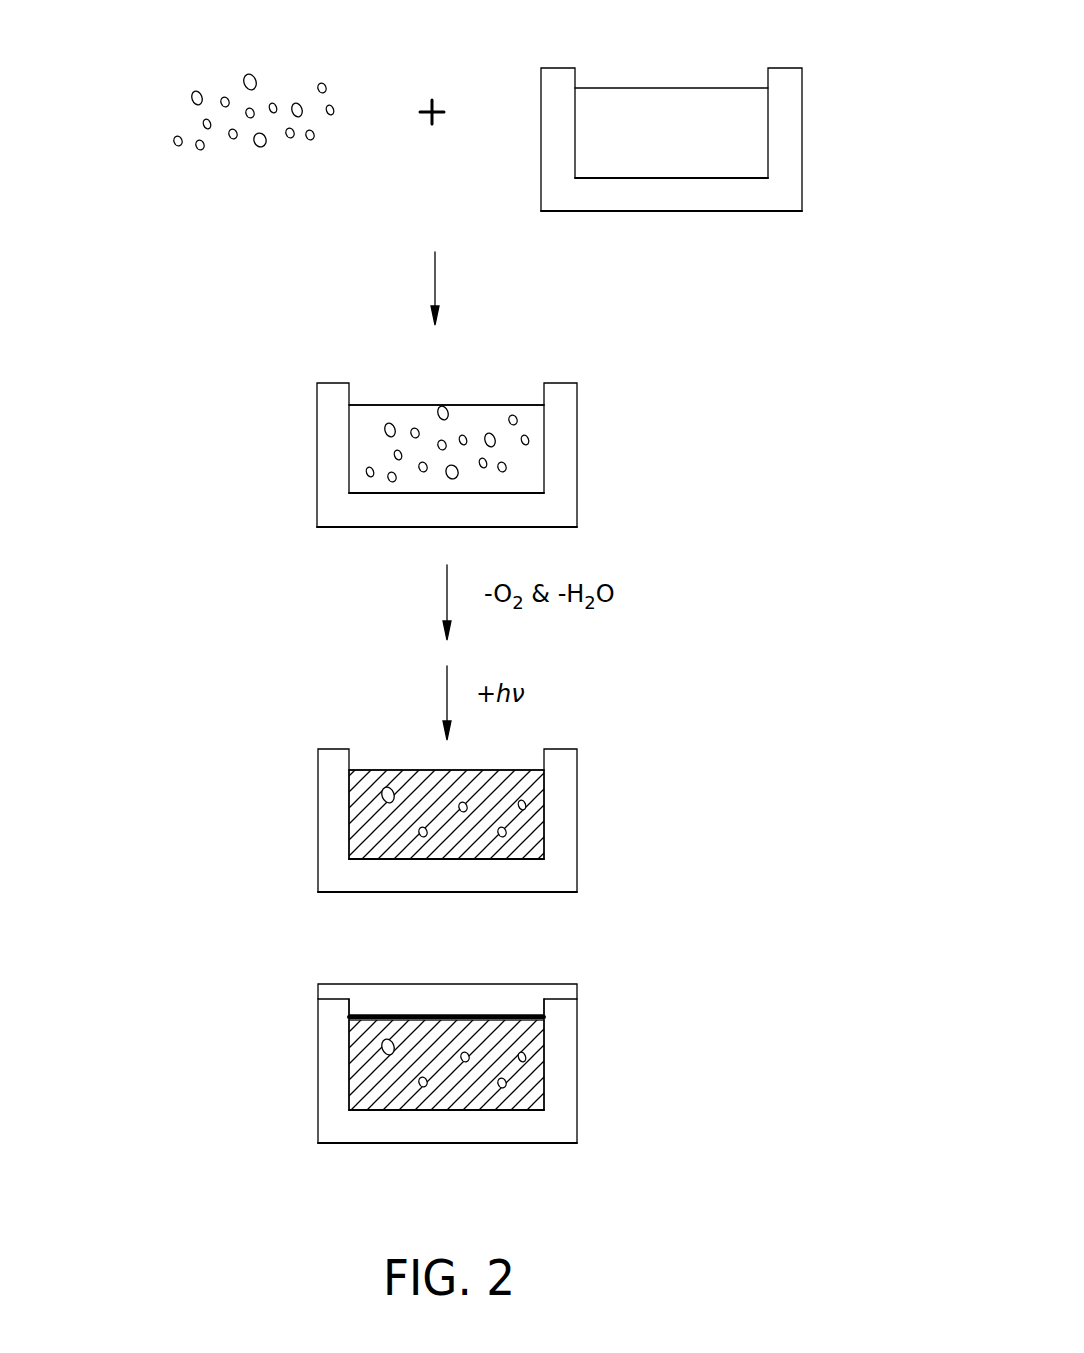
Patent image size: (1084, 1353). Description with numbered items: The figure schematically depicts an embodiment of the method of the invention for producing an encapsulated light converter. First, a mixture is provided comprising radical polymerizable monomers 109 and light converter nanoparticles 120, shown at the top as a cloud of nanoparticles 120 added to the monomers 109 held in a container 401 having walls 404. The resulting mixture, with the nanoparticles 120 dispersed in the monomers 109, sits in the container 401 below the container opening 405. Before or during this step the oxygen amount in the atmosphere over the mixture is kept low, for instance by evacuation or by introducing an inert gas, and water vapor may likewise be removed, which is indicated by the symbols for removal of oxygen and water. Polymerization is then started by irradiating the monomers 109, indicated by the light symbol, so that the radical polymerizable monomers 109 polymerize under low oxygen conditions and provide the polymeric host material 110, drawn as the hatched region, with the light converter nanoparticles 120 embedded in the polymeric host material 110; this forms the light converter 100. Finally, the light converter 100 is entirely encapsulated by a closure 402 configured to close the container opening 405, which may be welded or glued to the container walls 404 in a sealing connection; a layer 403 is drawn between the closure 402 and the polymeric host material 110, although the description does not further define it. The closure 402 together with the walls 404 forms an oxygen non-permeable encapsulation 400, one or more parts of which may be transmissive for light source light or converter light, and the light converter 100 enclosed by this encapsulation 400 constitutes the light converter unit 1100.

The light converter 100 is at (360, 810).
The radical polymerizable monomers 109 is at (719, 107).
The polymeric host material 110 is at (448, 842).
The light converter nanoparticles 120 is at (258, 140).
The encapsulation 400 is at (218, 1063).
The container 401 is at (783, 155).
The closure 402 is at (505, 998).
The layer 403 is at (558, 1000).
The walls 404 is at (717, 200).
The container opening 405 is at (400, 395).
The light converter unit 1100 is at (705, 1080).